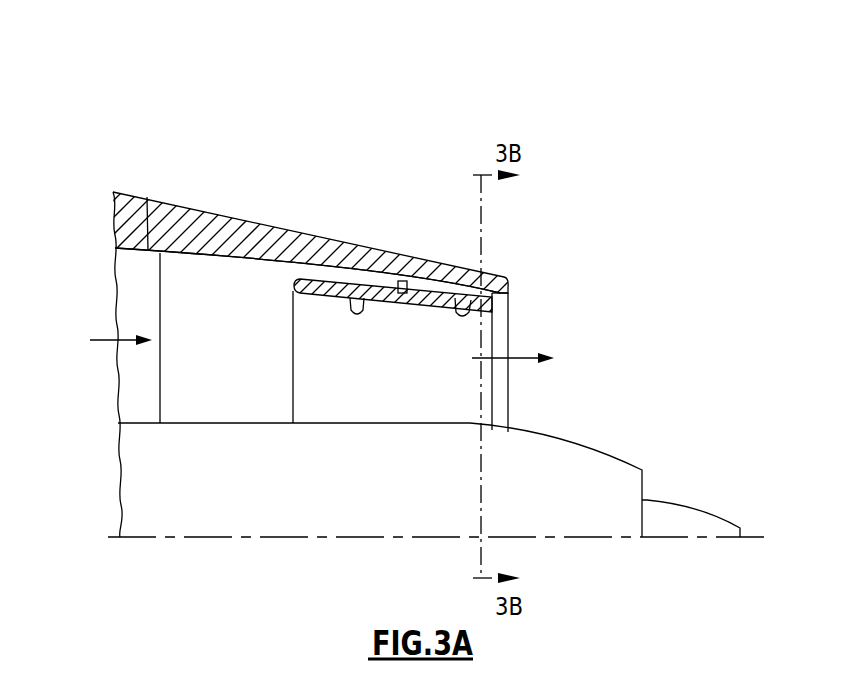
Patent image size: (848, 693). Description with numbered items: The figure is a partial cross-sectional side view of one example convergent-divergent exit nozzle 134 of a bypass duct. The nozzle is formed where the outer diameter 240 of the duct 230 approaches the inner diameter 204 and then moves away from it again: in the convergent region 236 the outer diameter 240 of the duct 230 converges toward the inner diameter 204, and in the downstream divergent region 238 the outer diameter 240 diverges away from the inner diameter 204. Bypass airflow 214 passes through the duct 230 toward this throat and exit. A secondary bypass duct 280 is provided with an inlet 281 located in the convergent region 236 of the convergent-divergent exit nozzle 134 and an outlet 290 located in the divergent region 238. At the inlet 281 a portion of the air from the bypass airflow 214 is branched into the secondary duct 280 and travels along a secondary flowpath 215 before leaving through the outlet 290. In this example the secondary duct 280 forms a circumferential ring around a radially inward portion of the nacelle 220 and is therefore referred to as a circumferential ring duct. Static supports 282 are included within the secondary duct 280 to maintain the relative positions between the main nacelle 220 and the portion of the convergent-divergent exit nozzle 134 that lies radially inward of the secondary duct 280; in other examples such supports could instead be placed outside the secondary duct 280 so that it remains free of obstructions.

The convergent-divergent exit nozzle 134 is at (186, 72).
The inner diameter 204 is at (249, 422).
The bypass airflow 214 is at (98, 340).
The secondary flowpath 215 is at (282, 285).
The nacelle 220 is at (127, 192).
The duct 230 is at (212, 277).
The convergent region 236 is at (352, 296).
The divergent region 238 is at (474, 306).
The outer diameter 240 is at (147, 197).
The secondary bypass duct 280 is at (380, 280).
The inlet 281 is at (292, 272).
The static supports 282 is at (413, 287).
The outlet 290 is at (494, 293).